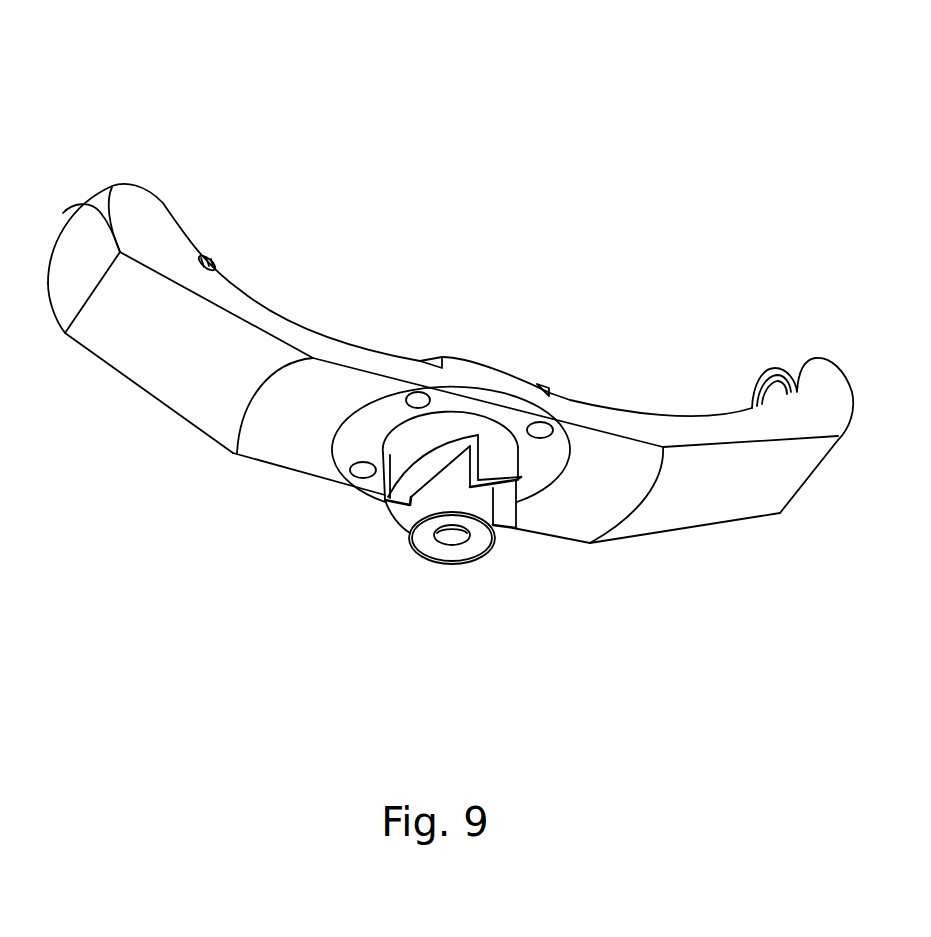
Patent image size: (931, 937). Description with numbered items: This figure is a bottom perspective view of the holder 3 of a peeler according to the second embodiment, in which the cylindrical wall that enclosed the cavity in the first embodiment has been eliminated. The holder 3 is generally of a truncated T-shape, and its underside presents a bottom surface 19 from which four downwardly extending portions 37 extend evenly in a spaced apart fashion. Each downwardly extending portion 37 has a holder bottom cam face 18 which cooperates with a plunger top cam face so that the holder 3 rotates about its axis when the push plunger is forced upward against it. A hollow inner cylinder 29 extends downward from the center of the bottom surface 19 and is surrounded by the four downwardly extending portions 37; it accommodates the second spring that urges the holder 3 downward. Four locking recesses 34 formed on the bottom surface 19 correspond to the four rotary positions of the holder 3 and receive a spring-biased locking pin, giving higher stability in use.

The holder 3 is at (595, 293).
The holder bottom cam face 18 is at (422, 473).
The bottom surface 19 is at (592, 487).
The hollow inner cylinder 29 is at (410, 547).
The locking recesses 34 is at (540, 428).
The downwardly extending portions 37 is at (418, 440).